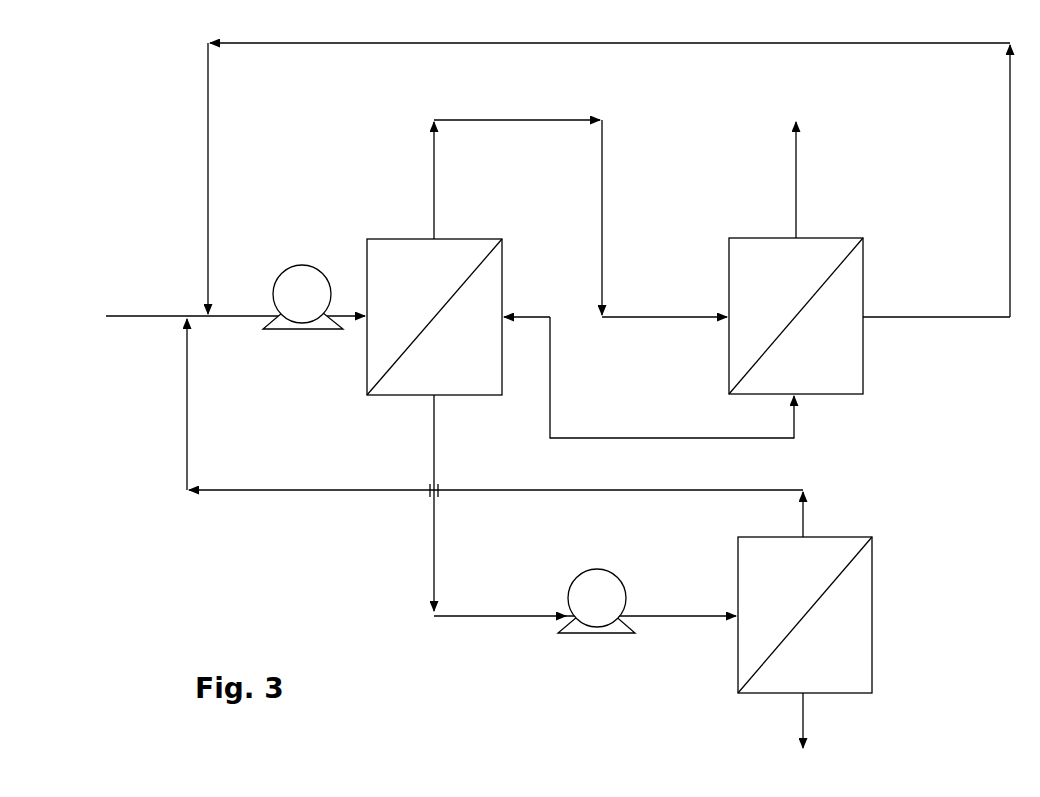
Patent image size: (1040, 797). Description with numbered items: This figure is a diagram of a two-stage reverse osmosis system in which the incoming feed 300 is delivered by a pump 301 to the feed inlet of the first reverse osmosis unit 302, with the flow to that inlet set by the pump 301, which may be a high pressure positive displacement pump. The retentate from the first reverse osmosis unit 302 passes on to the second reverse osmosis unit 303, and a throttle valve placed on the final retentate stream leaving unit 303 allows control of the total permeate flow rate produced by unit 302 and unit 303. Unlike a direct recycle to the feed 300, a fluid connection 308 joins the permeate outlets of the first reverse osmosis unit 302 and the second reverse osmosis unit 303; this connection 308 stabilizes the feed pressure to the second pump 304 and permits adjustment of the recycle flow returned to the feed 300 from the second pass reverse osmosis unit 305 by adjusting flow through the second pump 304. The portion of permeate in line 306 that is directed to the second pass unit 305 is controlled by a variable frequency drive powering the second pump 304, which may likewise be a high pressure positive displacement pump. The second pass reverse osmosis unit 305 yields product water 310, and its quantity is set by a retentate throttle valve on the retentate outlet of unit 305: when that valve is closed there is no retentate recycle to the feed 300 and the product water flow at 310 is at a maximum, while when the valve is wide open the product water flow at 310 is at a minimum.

The feed 300 is at (88, 290).
The pump 301 is at (302, 265).
The first reverse osmosis unit 302 is at (366, 386).
The second reverse osmosis unit 303 is at (845, 395).
The second pump 304 is at (595, 635).
The second pass reverse osmosis unit 305 is at (873, 584).
The permeate line 306 is at (436, 460).
The fluid connection 308 is at (660, 438).
The product water 310 is at (828, 740).